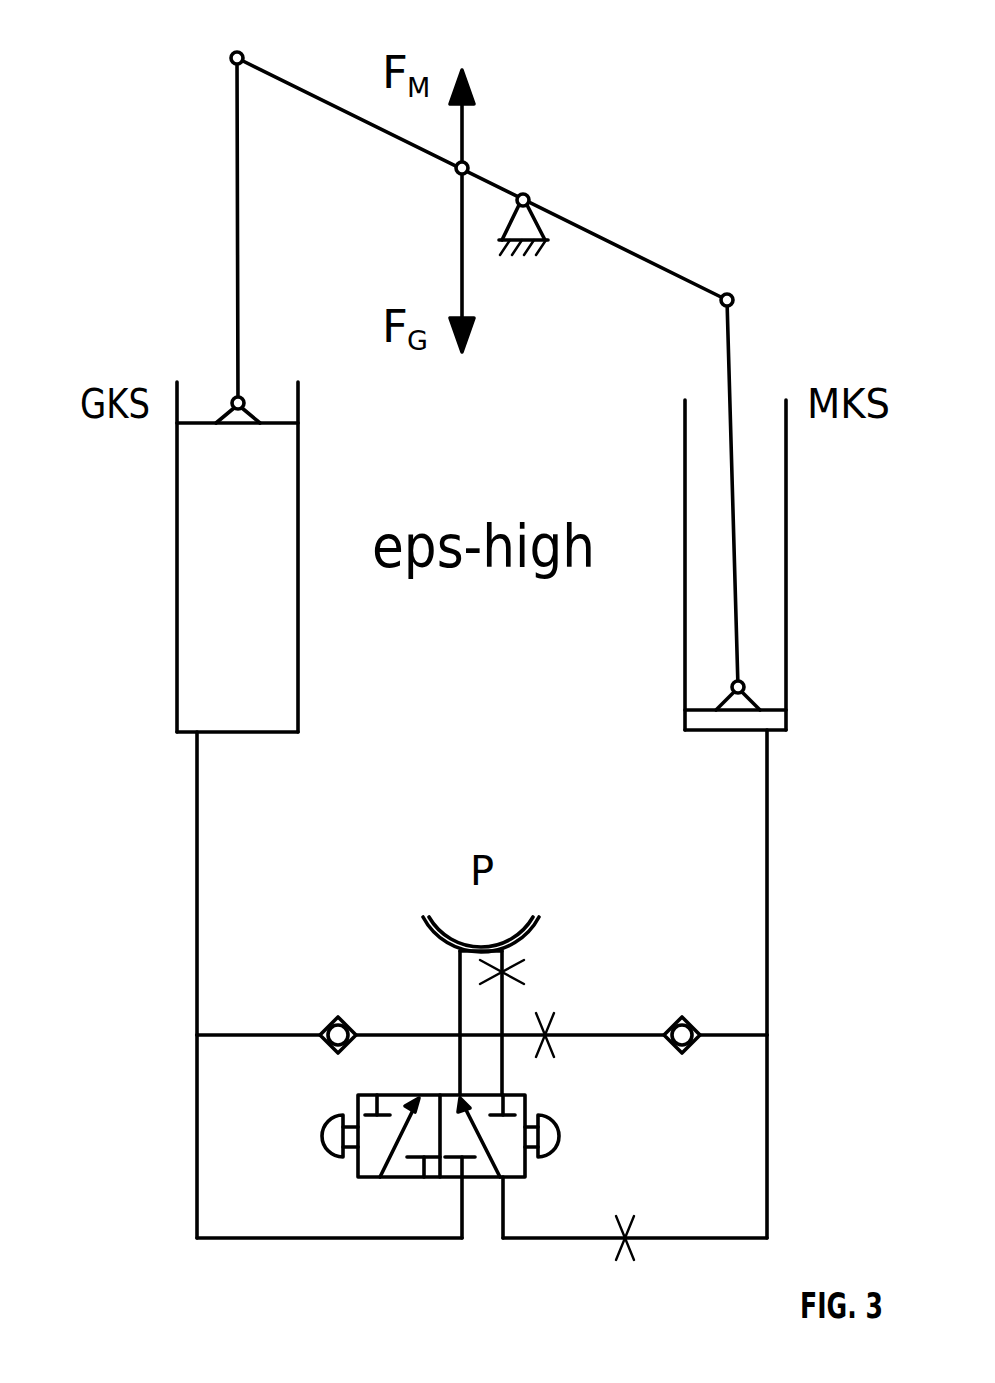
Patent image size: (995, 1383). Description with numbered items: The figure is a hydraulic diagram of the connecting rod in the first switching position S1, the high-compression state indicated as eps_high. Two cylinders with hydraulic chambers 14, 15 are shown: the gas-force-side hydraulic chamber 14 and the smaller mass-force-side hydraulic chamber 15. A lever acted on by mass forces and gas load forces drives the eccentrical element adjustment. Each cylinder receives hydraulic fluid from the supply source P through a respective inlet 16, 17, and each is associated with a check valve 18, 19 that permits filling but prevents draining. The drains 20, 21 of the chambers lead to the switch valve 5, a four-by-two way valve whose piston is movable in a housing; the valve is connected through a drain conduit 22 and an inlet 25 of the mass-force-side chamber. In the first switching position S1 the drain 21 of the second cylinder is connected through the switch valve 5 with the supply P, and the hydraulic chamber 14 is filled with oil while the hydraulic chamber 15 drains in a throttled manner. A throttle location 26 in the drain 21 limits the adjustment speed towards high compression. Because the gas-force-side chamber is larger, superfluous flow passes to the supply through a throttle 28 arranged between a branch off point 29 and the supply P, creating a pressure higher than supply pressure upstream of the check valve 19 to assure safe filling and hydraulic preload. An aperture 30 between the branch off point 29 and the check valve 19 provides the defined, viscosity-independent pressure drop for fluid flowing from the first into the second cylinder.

The first switching position S1 is at (768, 116).
The switch valve 5 is at (322, 1163).
The GKS hydraulic chamber 14 is at (222, 560).
The MKS hydraulic chamber 15 is at (755, 608).
The inlet 16 is at (240, 1030).
The inlet 17 is at (733, 1033).
The check valve 18 is at (338, 1018).
The check valve 19 is at (680, 1018).
The drain 20 is at (195, 1115).
The drain 21 is at (770, 1075).
The drain conduit 22 is at (460, 1055).
The inlet 25 is at (508, 1078).
The throttle location 26 is at (625, 1215).
The throttle 28 is at (540, 955).
The branch off point 29 is at (508, 1027).
The aperture 30 is at (547, 1020).